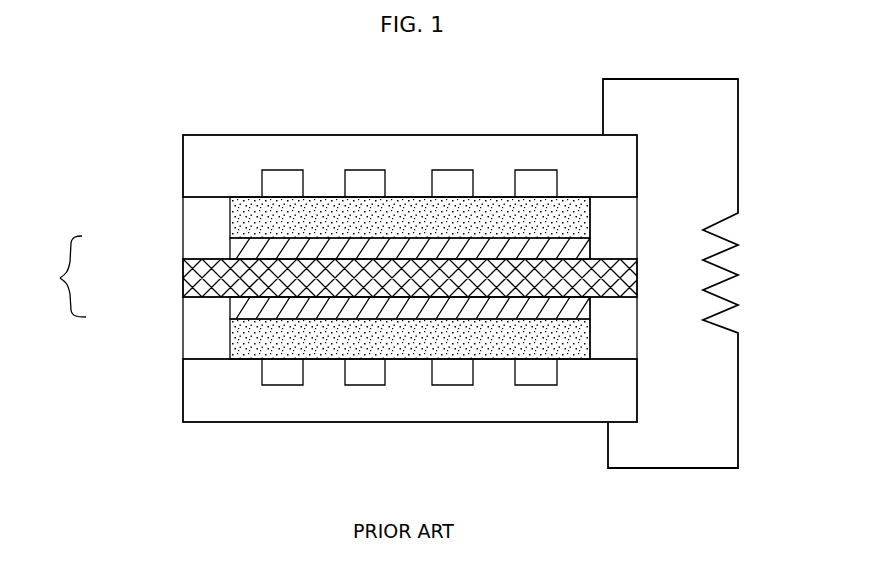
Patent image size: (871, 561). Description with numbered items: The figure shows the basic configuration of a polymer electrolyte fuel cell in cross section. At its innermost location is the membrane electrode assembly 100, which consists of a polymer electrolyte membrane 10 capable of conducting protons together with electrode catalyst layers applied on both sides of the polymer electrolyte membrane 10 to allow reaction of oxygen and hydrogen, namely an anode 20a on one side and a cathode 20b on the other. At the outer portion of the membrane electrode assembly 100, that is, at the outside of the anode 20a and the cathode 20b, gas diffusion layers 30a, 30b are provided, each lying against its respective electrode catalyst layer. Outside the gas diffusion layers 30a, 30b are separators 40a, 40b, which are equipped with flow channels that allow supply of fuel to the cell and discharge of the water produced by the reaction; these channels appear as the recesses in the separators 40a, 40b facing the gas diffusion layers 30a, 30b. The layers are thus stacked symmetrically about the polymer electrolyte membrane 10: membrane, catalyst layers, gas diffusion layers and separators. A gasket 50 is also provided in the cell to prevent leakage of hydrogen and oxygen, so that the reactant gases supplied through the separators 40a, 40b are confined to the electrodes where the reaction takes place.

The membrane electrode assembly 100 is at (53, 276).
The polymer electrolyte membrane 10 is at (183, 283).
The anode 20a is at (245, 253).
The cathode 20b is at (242, 318).
The gas diffusion layer 30a is at (248, 222).
The gas diffusion layer 30b is at (245, 336).
The separator 40a is at (197, 163).
The separator 40b is at (230, 392).
The gasket 50 is at (618, 328).